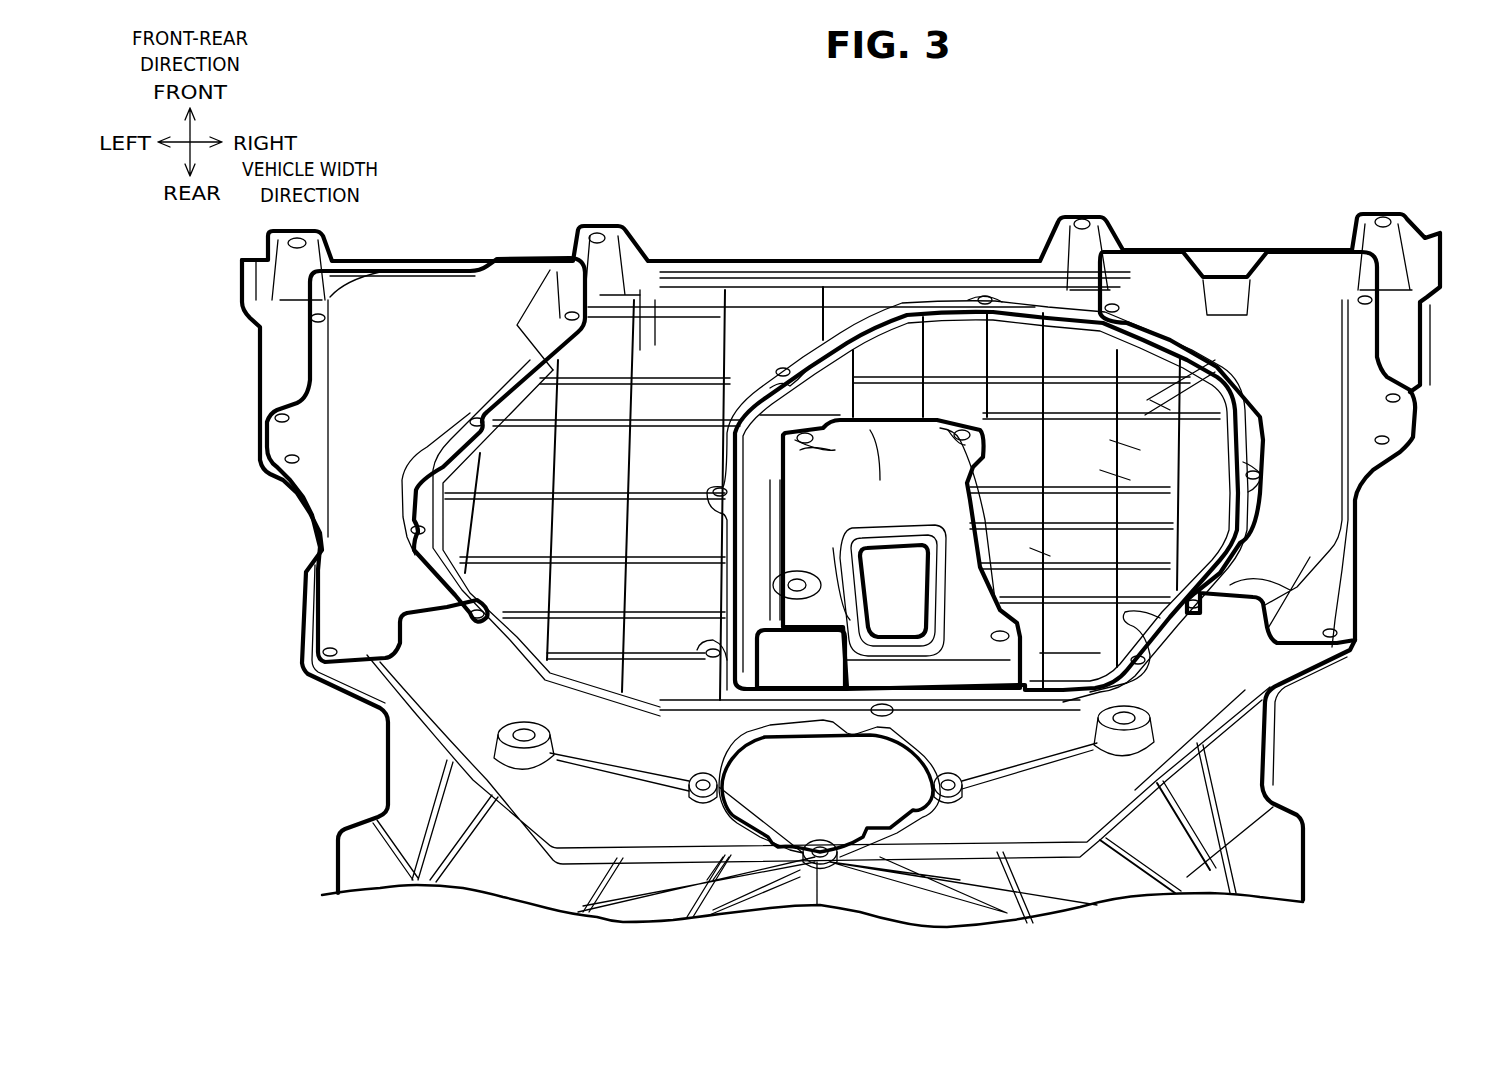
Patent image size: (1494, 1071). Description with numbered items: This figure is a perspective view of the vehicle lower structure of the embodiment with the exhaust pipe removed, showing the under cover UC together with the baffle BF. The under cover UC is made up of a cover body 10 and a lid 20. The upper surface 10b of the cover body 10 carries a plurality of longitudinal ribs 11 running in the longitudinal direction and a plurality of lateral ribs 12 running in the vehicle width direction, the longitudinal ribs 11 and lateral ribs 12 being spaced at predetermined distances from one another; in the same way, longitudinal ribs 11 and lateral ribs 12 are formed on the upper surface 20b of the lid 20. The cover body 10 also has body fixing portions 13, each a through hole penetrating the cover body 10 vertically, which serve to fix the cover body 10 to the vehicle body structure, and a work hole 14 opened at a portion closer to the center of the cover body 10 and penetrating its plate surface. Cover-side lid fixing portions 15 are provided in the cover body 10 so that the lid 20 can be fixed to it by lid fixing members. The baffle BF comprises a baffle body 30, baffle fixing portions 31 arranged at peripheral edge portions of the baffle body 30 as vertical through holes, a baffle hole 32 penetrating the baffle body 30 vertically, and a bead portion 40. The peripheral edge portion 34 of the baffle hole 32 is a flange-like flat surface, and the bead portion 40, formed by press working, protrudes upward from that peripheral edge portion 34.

The under cover UC is at (930, 184).
The cover body 10 is at (772, 333).
The lid 20 is at (953, 350).
The longitudinal ribs 11 is at (652, 345).
The lateral ribs 12 is at (660, 340).
The body fixing portions 13 is at (597, 238).
The work hole 14 is at (1145, 662).
The cover-side lid fixing portions 15 is at (720, 492).
The upper surface of the cover body 10b is at (567, 540).
The upper surface of the lid 20b is at (1057, 465).
The baffle body 30 is at (950, 563).
The baffle fixing portions 31 is at (797, 580).
The baffle hole 32 is at (927, 613).
The peripheral edge portion 34 is at (890, 537).
The bead portion 40 is at (1040, 552).
The baffle BF is at (1133, 483).